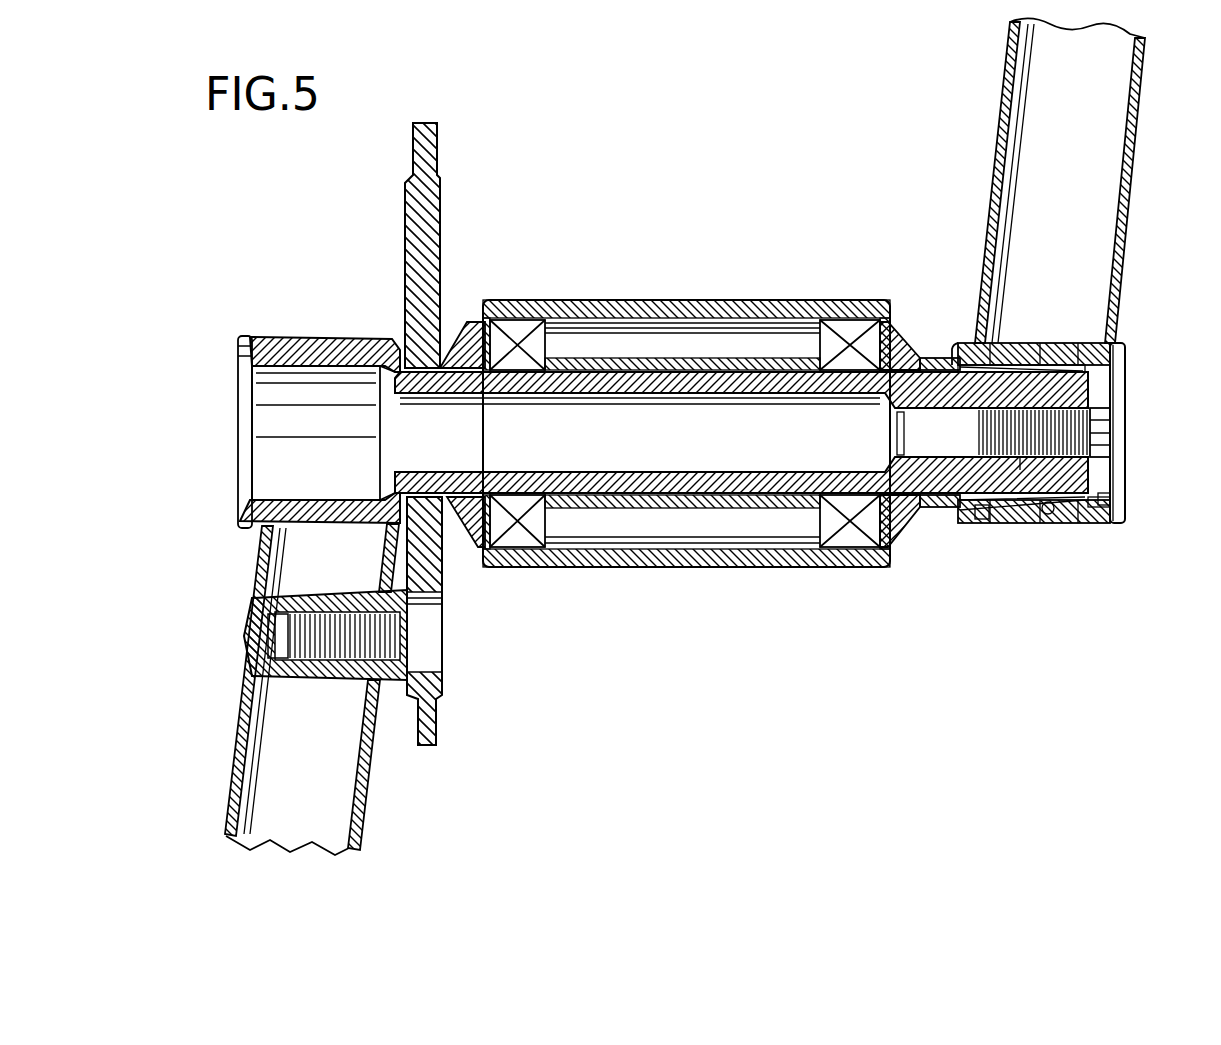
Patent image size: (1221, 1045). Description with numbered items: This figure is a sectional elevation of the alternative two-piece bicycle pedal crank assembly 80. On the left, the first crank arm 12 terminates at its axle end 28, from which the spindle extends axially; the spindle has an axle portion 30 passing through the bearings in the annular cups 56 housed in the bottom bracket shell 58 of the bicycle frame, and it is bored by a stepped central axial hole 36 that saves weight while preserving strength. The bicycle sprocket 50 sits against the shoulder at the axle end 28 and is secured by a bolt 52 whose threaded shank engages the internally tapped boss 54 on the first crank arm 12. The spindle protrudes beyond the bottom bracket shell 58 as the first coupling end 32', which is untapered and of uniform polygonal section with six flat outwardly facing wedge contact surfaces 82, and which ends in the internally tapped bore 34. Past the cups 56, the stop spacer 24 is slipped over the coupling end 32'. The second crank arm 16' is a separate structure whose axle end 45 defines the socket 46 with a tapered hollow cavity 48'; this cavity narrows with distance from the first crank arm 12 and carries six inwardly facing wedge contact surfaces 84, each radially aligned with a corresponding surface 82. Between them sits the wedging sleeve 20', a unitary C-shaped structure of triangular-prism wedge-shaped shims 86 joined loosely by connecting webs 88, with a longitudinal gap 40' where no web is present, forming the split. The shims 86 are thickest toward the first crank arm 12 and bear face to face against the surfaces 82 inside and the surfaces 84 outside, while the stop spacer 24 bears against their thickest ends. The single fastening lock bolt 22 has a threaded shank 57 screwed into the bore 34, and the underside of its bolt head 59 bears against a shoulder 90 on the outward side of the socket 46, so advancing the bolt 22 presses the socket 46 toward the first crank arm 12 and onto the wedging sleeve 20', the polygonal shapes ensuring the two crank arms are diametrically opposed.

The first crank arm 12 is at (338, 774).
The second crank arm 16' is at (1081, 180).
The wedging sleeve 20' is at (1033, 188).
The fastening lock bolt 22 is at (1140, 432).
The stop spacer 24 is at (932, 512).
The axle end 28 is at (250, 528).
The axle portion 30 is at (700, 478).
The first coupling end 32' is at (1128, 535).
The internally tapped bore 34 is at (1040, 455).
The axial hole 36 is at (600, 395).
The longitudinal gap 40' is at (936, 342).
The axle end 45 is at (968, 328).
The socket 46 is at (1055, 518).
The hollow cavity 48' is at (1140, 502).
The bicycle sprocket 50 is at (412, 214).
The bolt 52 is at (430, 637).
The internally tapped boss 54 is at (390, 685).
The annular cups 56 is at (508, 330).
The threaded shank 57 is at (1030, 445).
The bottom bracket shell 58 is at (718, 300).
The bolt head 59 is at (1120, 472).
The bicycle pedal crank assembly 80 is at (645, 188).
The wedge contact surfaces 82 is at (1050, 352).
The wedge contact surfaces 84 is at (1100, 343).
The wedge-shaped shims 86 is at (995, 348).
The connecting webs 88 is at (983, 522).
The shoulder 90 is at (1130, 360).